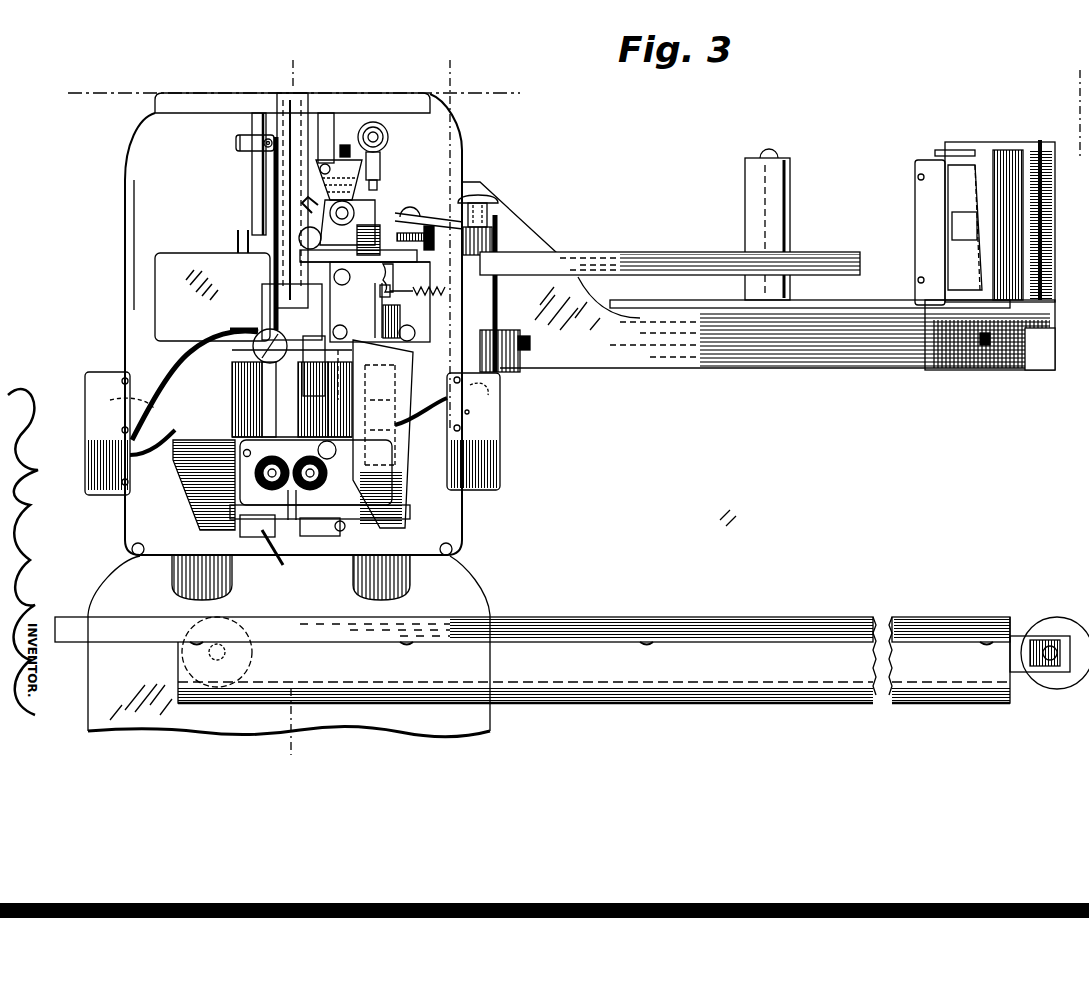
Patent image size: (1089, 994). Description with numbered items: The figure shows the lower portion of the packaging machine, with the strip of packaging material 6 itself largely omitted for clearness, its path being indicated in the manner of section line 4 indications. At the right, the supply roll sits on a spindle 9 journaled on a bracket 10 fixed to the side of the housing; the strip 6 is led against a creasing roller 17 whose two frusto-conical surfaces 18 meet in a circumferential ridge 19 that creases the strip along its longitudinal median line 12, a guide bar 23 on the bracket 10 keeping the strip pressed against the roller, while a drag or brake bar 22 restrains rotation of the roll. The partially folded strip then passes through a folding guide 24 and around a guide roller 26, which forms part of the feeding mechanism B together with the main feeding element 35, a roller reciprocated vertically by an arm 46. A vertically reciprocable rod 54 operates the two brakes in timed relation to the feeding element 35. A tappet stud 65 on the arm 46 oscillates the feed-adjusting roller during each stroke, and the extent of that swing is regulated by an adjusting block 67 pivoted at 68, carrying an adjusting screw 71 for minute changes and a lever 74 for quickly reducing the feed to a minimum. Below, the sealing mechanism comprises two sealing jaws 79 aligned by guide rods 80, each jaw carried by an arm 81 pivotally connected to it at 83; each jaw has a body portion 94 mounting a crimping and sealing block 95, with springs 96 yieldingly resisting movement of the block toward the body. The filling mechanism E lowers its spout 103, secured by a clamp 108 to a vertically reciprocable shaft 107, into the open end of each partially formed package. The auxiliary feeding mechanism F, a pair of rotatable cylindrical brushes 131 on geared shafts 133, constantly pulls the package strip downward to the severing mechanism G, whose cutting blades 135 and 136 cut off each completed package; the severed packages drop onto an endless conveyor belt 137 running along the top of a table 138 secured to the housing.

The section line 4- 4 is at (1088, 66).
The strip of packaging material 6 is at (316, 73).
The spindle 9 is at (745, 173).
The bracket 10 is at (727, 363).
The longitudinal median line 12 is at (466, 72).
The creasing roller 17 is at (945, 163).
The frusto-conical surfaces 18 is at (960, 198).
The circumferential ridge 19 is at (960, 226).
The drag or brake bar 22 is at (665, 262).
The guide bar 23 is at (945, 176).
The folding guide 24 is at (498, 240).
The guide roller 26 is at (418, 210).
The main feeding element 35 is at (389, 137).
The arm 46 is at (347, 137).
The vertically reciprocable rod 54 is at (352, 102).
The tappet stud 65 is at (368, 196).
The adjusting block 67 is at (315, 262).
The pivot 68 is at (301, 244).
The adjusting screw 71 is at (410, 282).
The lever 74 is at (378, 226).
The sealing jaws 79 is at (190, 502).
The guide rods 80 is at (272, 380).
The arm 81 is at (455, 413).
The pivotal connection 83 is at (450, 392).
The body portion 94 is at (202, 358).
The crimping and sealing block 95 is at (308, 340).
The springs 96 is at (318, 395).
The spout 103 is at (300, 292).
The vertically reciprocable shaft 107 is at (254, 198).
The clamp 108 is at (236, 141).
The rotatable cylindrical brushes 131 is at (262, 476).
The shafts 133 is at (255, 468).
The cutting blade 135 is at (307, 543).
The cutting blade 136 is at (263, 545).
The endless conveyor belt 137 is at (648, 594).
The table 138 is at (748, 602).
The feeding mechanism B is at (375, 205).
The filling mechanism E is at (272, 167).
The auxiliary feeding mechanism F is at (260, 473).
The severing mechanism G is at (352, 542).